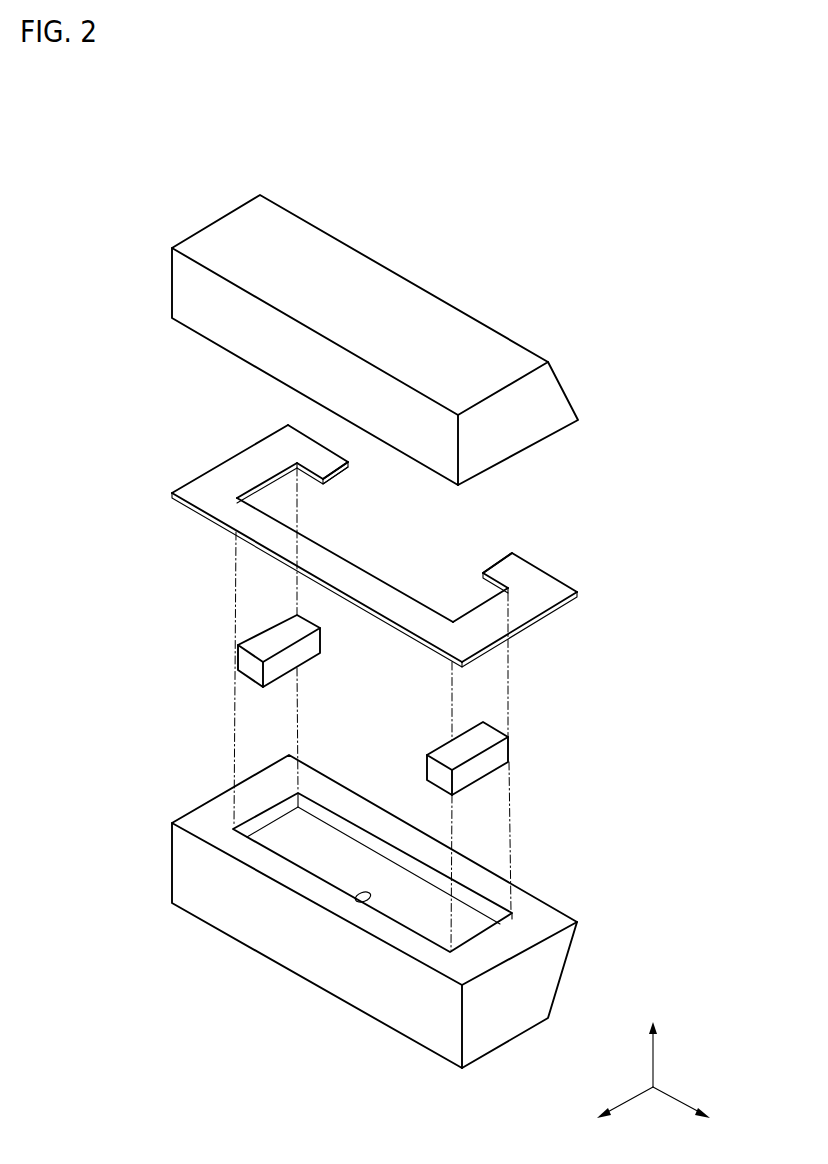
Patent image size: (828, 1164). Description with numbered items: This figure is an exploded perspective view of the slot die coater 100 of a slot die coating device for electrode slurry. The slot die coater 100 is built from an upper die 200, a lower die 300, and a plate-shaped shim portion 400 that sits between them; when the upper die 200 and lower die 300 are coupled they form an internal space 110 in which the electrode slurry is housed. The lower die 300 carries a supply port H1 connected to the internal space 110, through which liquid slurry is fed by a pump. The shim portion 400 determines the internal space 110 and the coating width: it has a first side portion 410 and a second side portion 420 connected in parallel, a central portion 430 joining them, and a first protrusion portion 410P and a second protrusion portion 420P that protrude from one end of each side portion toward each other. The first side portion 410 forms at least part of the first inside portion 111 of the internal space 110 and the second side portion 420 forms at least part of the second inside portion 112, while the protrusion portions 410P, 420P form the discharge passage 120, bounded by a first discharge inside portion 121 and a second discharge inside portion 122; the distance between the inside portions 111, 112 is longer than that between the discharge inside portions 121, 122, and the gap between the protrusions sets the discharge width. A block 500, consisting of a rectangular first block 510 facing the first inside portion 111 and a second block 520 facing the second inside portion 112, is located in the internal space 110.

The slot die coater 100 is at (417, 143).
The upper die 200 is at (443, 315).
The lower die 300 is at (387, 922).
The internal space 110 is at (360, 858).
The first inside portion 111 is at (263, 820).
The second inside portion 112 is at (457, 927).
The supply port H1 is at (357, 900).
The shim portion 400 is at (359, 531).
The first side portion 410 is at (207, 478).
The second side portion 420 is at (512, 617).
The central portion 430 is at (253, 522).
The first protrusion portion 410P is at (308, 452).
The second protrusion portion 420P is at (515, 567).
The discharge passage 120 is at (417, 527).
The first discharge inside portion 121 is at (344, 468).
The second discharge inside portion 122 is at (496, 560).
The block 500 is at (295, 705).
The first block 510 is at (243, 663).
The second block 520 is at (433, 772).